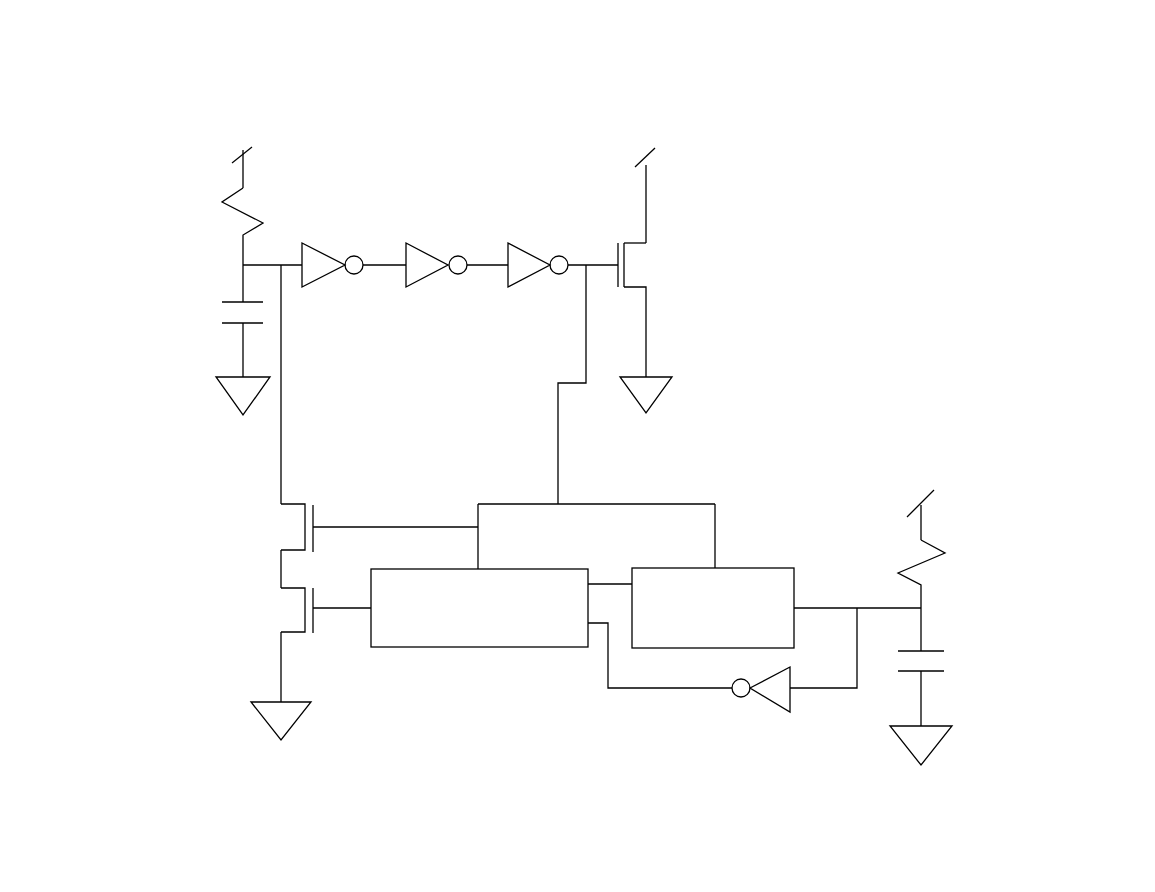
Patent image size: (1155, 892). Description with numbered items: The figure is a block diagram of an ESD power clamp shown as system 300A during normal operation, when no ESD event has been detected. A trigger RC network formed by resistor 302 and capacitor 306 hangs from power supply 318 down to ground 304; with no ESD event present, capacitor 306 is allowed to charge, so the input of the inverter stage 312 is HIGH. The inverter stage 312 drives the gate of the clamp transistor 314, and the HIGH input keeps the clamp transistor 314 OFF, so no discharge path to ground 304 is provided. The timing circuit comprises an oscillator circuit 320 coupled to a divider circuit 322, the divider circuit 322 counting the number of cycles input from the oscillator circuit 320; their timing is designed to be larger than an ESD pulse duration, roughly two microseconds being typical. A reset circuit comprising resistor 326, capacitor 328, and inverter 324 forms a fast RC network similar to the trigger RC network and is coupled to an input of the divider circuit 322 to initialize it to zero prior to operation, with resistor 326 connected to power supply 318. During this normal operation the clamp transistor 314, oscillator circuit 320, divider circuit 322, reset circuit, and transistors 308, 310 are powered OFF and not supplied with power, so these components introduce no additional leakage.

The system 300A is at (845, 175).
The resistor 302 is at (207, 202).
The ground 304 is at (212, 403).
The capacitor 306 is at (212, 316).
The transistor 308 is at (262, 548).
The transistor 310 is at (257, 633).
The inverter stage 312 is at (443, 208).
The clamp transistor 314 is at (664, 269).
The power supply 318 is at (585, 327).
The oscillator circuit 320 is at (760, 563).
The divider circuit 322 is at (482, 660).
The inverter 324 is at (753, 708).
The resistor 326 is at (948, 555).
The capacitor 328 is at (955, 658).